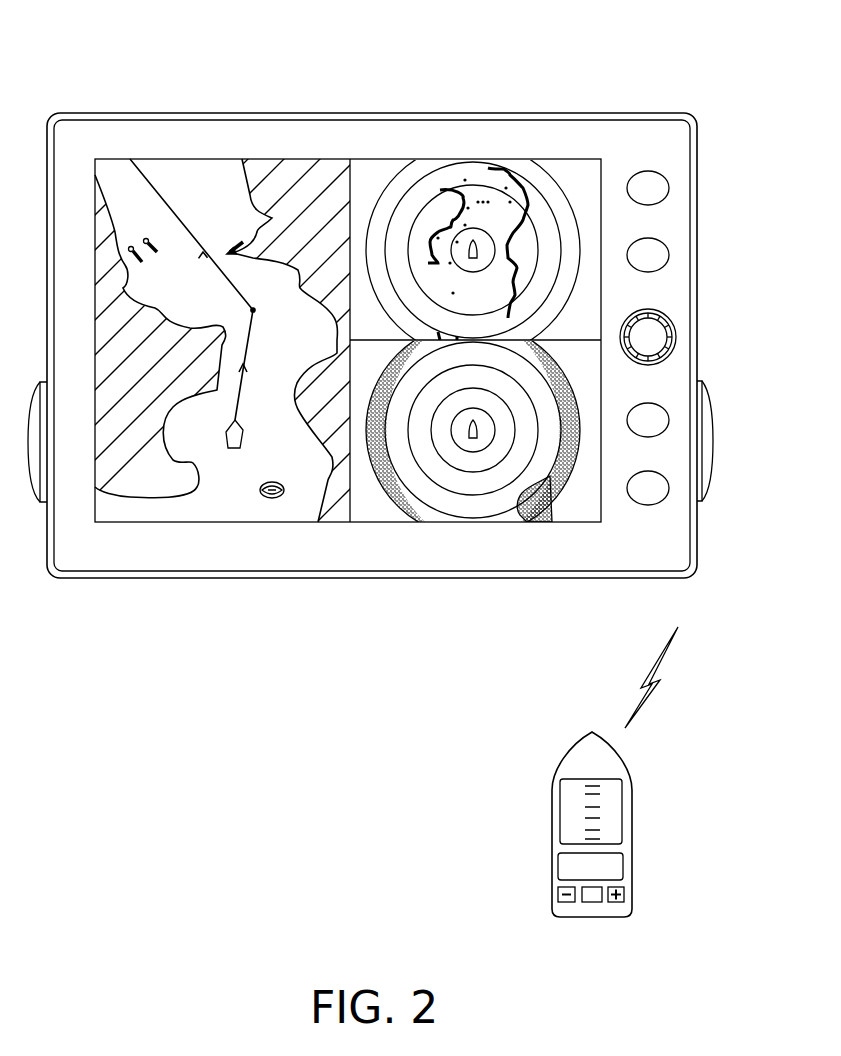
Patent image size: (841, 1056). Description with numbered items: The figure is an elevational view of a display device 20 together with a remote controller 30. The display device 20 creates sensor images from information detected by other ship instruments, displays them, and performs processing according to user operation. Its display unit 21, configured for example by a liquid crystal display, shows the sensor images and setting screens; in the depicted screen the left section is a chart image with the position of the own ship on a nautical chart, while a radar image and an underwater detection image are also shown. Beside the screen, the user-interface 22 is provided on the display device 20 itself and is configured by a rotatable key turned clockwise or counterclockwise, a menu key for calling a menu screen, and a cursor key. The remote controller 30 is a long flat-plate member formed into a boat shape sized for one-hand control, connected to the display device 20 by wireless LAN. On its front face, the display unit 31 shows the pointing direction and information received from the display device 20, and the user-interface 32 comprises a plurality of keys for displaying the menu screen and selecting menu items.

The display device 20 is at (699, 106).
The display unit 21 is at (609, 174).
The user-interface 22 is at (680, 297).
The remote controller 30 is at (518, 744).
The display unit 31 is at (563, 813).
The user-interface 32 is at (553, 883).